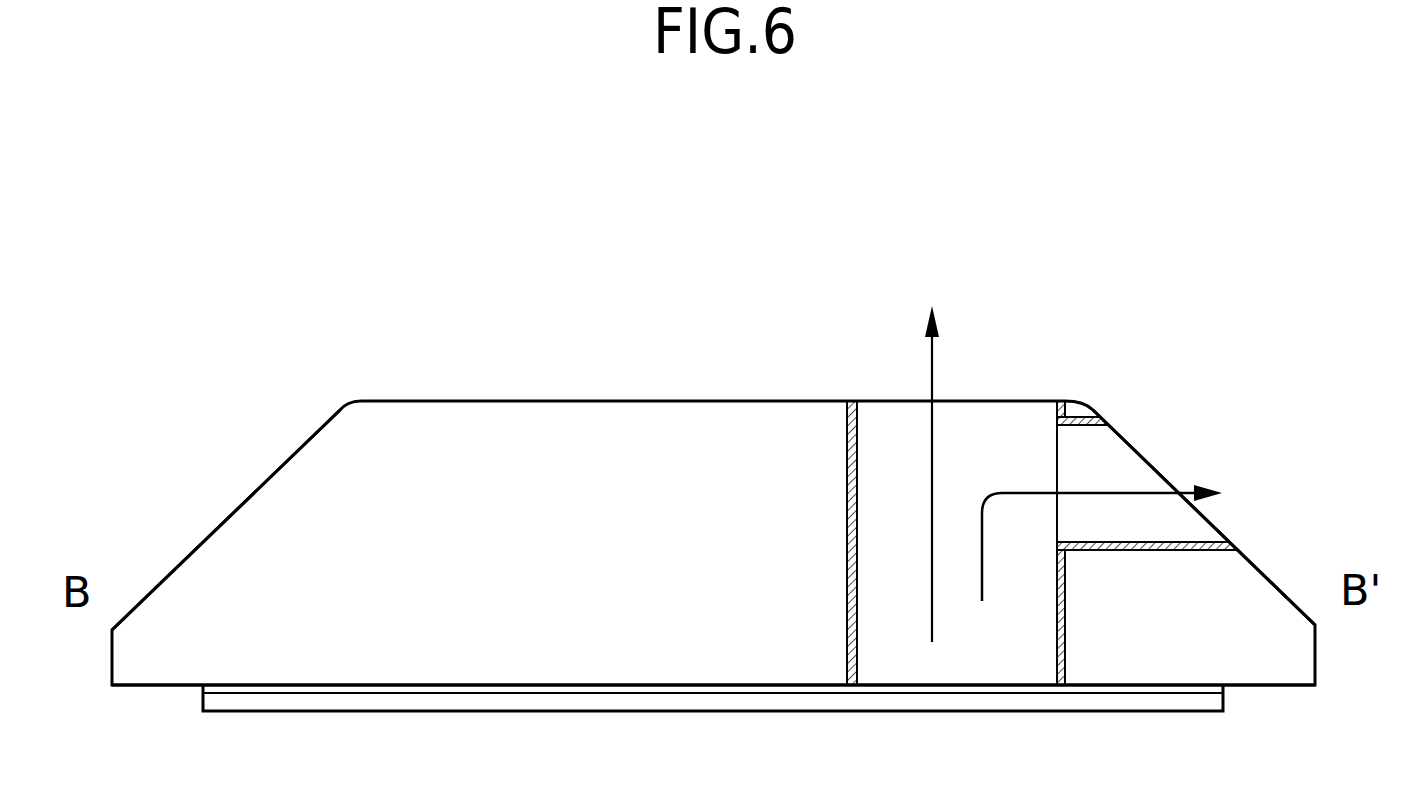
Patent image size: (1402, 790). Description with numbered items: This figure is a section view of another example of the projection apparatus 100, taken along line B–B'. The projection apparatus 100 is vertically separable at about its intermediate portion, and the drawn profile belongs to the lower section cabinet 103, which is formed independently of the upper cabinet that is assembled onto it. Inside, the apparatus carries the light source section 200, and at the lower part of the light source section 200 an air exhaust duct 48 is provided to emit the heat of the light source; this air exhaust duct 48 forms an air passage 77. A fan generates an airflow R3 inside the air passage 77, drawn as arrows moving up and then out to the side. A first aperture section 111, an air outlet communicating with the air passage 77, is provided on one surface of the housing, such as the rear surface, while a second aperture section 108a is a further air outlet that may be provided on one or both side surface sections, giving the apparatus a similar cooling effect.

The projection apparatus 100 is at (603, 232).
The lower section cabinet 103 is at (260, 483).
The first aperture section 111 is at (856, 401).
The light source section 200 is at (822, 449).
The second aperture section 108a is at (1218, 531).
The air exhaust duct 48 is at (846, 655).
The air passage 77 is at (915, 667).
The airflow R3 is at (932, 356).